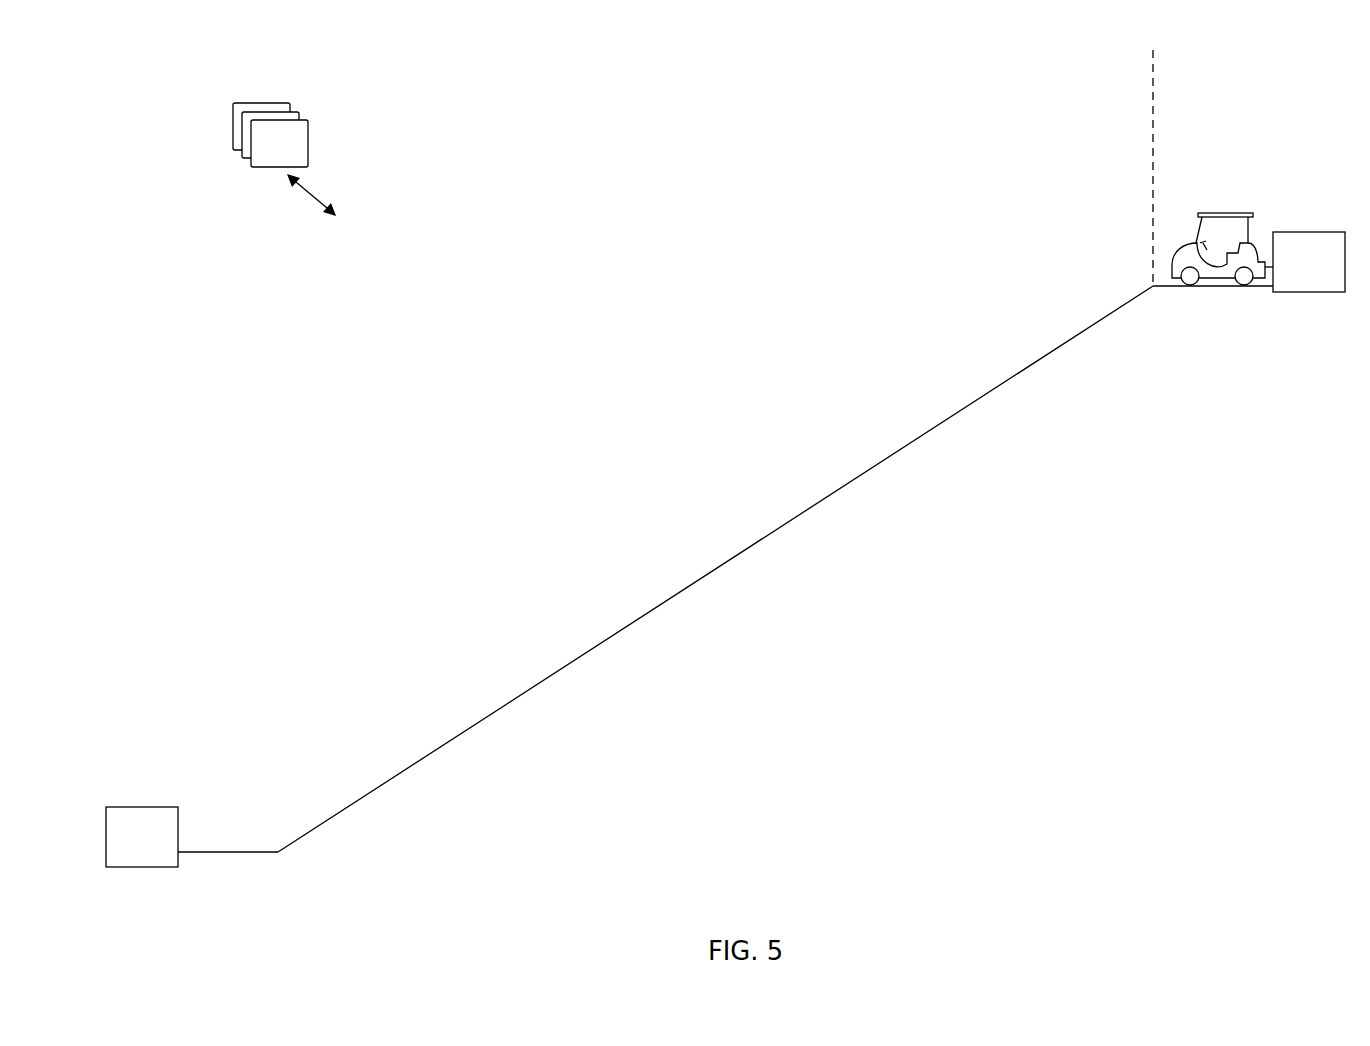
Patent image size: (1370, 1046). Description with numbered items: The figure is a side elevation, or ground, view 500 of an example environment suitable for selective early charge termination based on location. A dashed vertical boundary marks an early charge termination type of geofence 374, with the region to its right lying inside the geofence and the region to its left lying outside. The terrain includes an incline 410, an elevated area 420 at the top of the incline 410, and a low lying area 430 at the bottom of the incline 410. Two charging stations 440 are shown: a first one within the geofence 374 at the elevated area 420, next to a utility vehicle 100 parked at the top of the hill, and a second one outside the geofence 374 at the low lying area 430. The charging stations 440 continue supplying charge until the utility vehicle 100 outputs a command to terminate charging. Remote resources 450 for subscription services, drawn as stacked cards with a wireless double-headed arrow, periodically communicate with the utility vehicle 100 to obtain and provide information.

The side elevation view 500 is at (108, 88).
The geofence 374 is at (1355, 98).
The remote resources 450 is at (297, 153).
The utility vehicle 100 is at (1243, 184).
The charging stations 440 is at (138, 760).
The elevated area 420 is at (1234, 326).
The incline 410 is at (797, 608).
The low lying area 430 is at (230, 891).